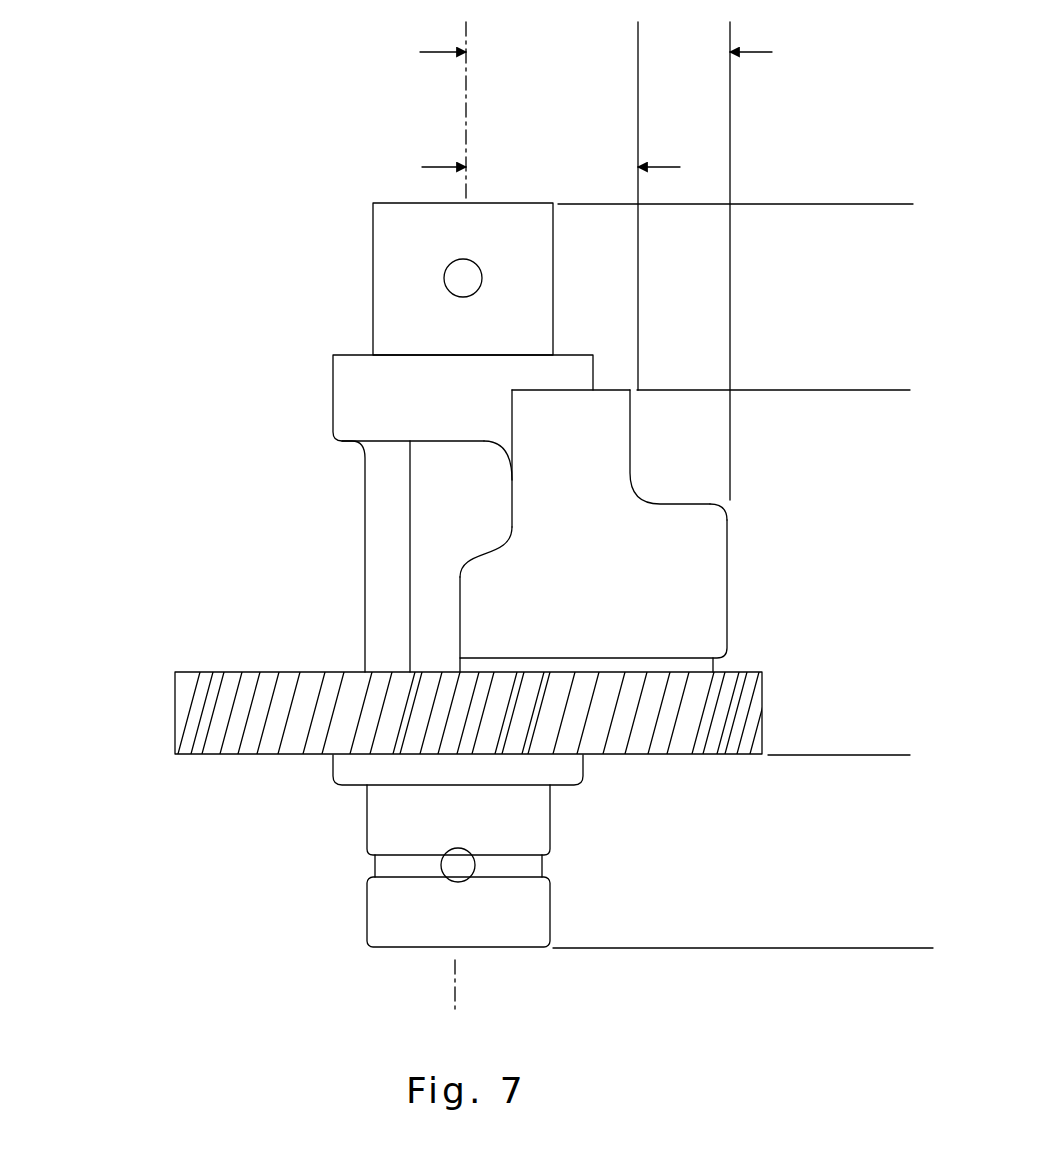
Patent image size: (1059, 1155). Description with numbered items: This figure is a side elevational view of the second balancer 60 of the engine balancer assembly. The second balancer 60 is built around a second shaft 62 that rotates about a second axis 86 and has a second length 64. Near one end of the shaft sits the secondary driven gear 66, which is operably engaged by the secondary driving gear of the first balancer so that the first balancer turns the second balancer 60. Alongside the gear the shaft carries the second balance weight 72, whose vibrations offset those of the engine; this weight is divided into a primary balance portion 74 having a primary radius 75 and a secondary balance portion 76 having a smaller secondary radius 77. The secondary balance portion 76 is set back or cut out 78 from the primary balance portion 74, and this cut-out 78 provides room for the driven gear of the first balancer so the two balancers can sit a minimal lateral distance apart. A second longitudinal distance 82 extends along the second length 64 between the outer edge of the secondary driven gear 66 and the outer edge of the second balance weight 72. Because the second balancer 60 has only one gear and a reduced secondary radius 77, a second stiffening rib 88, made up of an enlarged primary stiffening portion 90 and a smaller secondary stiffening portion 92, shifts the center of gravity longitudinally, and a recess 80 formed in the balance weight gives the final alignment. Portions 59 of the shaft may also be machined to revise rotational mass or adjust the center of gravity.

The second balancer 60 is at (240, 202).
The portions of the shaft 59 is at (565, 777).
The second shaft 62 is at (553, 223).
The second length 64 is at (863, 203).
The secondary driven gear 66 is at (197, 707).
The second balance weight 72 is at (672, 502).
The primary balance portion 74 is at (705, 600).
The primary radius 75 is at (772, 52).
The secondary balance portion 76 is at (542, 425).
The secondary radius 77 is at (427, 167).
The set back or cut-out 78 is at (650, 467).
The recess 80 is at (487, 528).
The second longitudinal distance 82 is at (868, 389).
The second axis 86 is at (467, 118).
The second stiffening rib 88 is at (387, 572).
The primary stiffening portion 90 is at (355, 367).
The secondary stiffening portion 92 is at (373, 633).